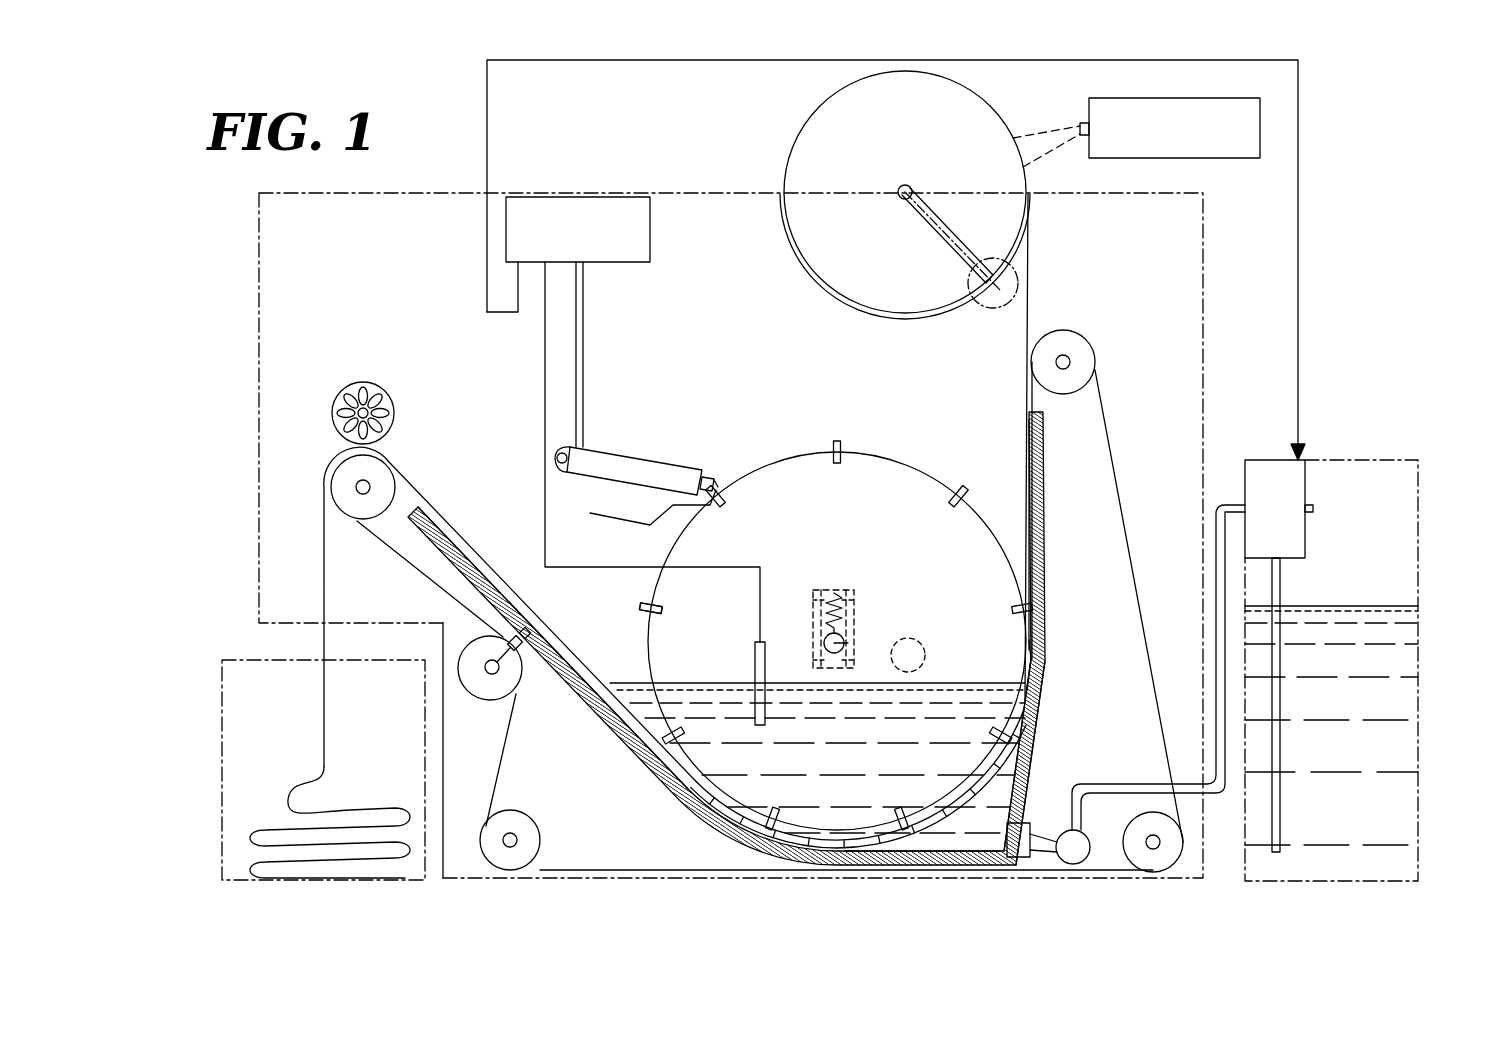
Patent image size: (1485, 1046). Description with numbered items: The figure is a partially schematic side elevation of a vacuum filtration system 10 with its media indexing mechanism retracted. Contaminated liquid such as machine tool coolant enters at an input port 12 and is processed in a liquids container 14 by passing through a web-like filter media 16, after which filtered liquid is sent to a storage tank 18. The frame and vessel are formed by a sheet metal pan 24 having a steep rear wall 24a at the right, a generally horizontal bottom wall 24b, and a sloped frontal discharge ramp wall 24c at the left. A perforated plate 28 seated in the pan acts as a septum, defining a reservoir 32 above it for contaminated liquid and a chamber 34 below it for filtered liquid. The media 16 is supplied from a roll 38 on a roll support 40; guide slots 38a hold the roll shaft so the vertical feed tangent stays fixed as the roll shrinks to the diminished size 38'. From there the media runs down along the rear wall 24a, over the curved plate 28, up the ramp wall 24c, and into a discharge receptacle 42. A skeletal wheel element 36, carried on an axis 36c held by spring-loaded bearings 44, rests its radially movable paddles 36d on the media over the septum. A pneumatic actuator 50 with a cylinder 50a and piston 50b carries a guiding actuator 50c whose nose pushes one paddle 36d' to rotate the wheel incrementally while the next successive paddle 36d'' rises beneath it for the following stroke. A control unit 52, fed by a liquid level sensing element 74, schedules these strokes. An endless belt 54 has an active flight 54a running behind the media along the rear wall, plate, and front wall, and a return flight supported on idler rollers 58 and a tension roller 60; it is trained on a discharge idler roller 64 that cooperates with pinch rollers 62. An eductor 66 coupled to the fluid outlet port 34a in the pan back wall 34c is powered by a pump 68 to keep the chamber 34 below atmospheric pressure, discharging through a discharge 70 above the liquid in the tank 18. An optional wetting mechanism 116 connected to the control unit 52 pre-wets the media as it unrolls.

The filtration system 10 is at (246, 265).
The input port 12 is at (920, 642).
The liquids container 14 is at (678, 808).
The filter media 16 is at (323, 740).
The storage tank 18 is at (1418, 568).
The pan 24 is at (1044, 462).
The rear wall 24a is at (1044, 553).
The bottom wall 24b is at (932, 866).
The discharge ramp wall 24c is at (610, 722).
The perforated plate 28 is at (838, 866).
The reservoir 32 is at (730, 683).
The chamber 34 is at (992, 852).
The fluid outlet port 34a is at (1012, 822).
The pan back wall 34c is at (1036, 720).
The wheel element 36 is at (904, 462).
The axis 36c is at (850, 640).
The paddles 36d is at (869, 635).
The wheel paddle 36d' is at (757, 505).
The next successive wheel paddle 36d'' is at (691, 599).
The roll 38 is at (932, 192).
The slots 38a is at (956, 252).
The diminished roll 38' is at (1020, 283).
The roll support 40 is at (782, 207).
The discharge receptacle 42 is at (240, 660).
The spring loaded bearings 44 is at (850, 590).
The pneumatic actuator 50 is at (652, 438).
The cylinder 50a is at (636, 505).
The piston 50b is at (716, 477).
The guiding actuator 50c is at (575, 410).
The control unit 52 is at (652, 233).
The belt 54 is at (1100, 402).
The active flight 54a is at (1032, 497).
The idler rollers 58 is at (1070, 345).
The tension roller 60 is at (505, 683).
The pinch rollers 62 is at (350, 386).
The discharge idler roller 64 is at (383, 470).
The eductor 66 is at (1075, 866).
The pump 68 is at (1270, 482).
The discharge 70 is at (1312, 506).
The liquid level sensing element 74 is at (766, 666).
The wetting mechanism 116 is at (1186, 98).